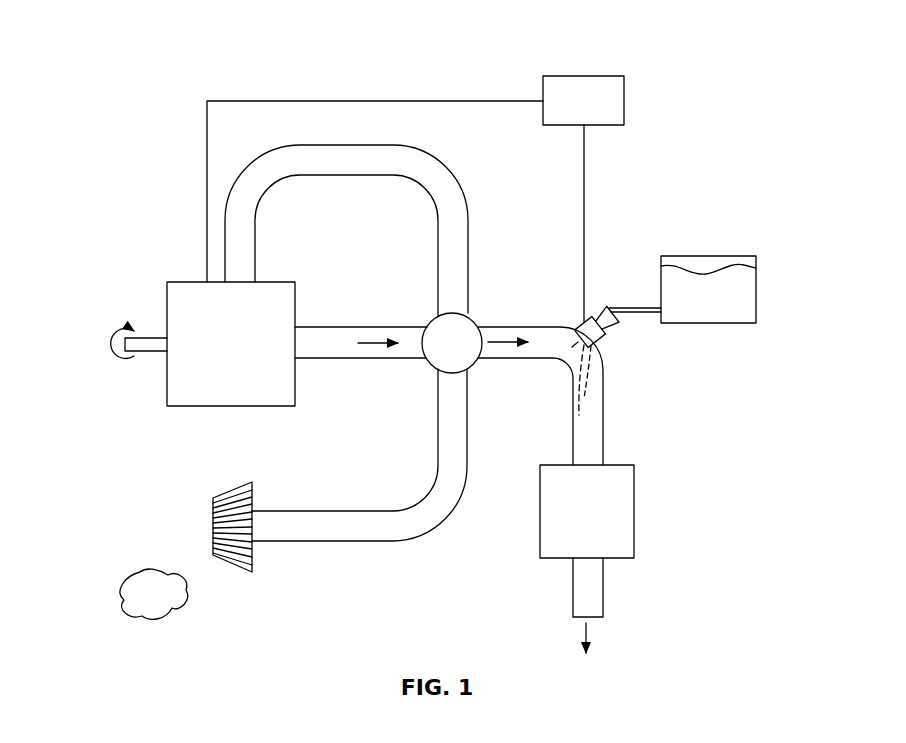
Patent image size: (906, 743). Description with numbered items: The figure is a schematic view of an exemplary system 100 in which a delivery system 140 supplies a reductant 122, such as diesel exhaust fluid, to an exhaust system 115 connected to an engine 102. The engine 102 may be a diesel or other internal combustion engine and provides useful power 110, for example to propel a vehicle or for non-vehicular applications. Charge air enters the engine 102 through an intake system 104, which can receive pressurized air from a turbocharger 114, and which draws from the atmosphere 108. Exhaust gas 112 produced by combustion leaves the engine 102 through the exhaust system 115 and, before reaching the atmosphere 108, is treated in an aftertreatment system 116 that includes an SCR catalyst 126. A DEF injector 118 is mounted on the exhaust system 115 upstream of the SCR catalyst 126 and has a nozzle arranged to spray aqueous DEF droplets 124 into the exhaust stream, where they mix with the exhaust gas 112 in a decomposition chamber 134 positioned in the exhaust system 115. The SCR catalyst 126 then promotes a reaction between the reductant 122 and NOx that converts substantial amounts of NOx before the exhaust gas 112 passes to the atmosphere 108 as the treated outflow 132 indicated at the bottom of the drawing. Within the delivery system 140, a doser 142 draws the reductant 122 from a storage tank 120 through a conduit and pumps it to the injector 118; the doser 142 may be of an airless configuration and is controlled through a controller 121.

The system 100 is at (620, 52).
The engine 102 is at (190, 292).
The intake system 104 is at (266, 264).
The atmosphere 108 is at (135, 568).
The useful power 110 is at (121, 369).
The exhaust gas 112 is at (387, 339).
The turbocharger 114 is at (476, 320).
The exhaust system 115 is at (627, 225).
The aftertreatment system 116 is at (708, 452).
The DEF injector 118 is at (604, 342).
The storage tank 120 is at (718, 256).
The controller 121 is at (614, 105).
The reductant 122 is at (720, 315).
The DEF droplets 124 is at (590, 393).
The SCR catalyst 126 is at (634, 510).
The exhaust outlet flow 132 is at (591, 645).
The decomposition chamber 134 is at (560, 403).
The delivery system 140 is at (679, 353).
The doser 142 is at (593, 311).